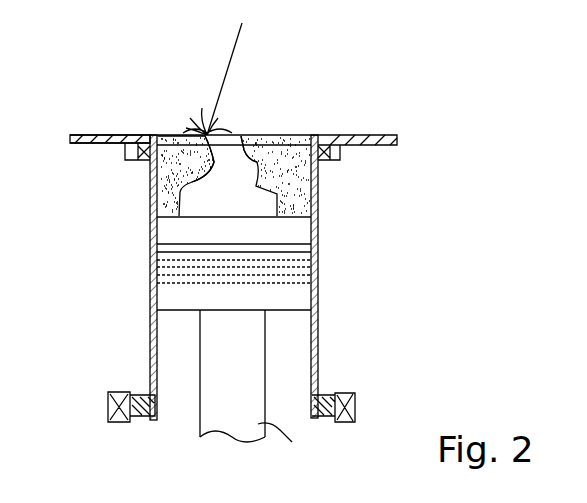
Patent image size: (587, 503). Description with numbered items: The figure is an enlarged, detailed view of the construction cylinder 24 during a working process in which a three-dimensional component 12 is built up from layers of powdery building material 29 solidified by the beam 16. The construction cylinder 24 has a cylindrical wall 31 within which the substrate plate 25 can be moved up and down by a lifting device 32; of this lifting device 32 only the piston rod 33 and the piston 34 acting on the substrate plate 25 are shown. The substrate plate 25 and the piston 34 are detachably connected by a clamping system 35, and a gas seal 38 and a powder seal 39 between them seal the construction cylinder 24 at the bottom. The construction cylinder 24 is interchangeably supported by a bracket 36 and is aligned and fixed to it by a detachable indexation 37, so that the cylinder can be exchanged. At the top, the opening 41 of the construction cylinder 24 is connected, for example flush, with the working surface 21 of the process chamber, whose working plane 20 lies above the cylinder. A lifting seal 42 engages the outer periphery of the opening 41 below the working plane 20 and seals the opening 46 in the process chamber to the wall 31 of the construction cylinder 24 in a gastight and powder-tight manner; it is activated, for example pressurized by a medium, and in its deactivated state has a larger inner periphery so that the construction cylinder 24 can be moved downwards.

The three-dimensional component 12 is at (170, 134).
The beam 16 is at (228, 62).
The working plane 20 is at (372, 134).
The working surface 21 is at (84, 134).
The construction cylinder 24 is at (140, 340).
The substrate plate 25 is at (258, 240).
The powdery building material 29 is at (297, 134).
The cylindrical wall 31 is at (320, 197).
The lifting device 32 is at (178, 440).
The piston rod 33 is at (262, 424).
The piston 34 is at (158, 299).
The clamping system 35 is at (311, 253).
The bracket 36 is at (330, 392).
The indexation 37 is at (108, 392).
The gas seal 38 is at (311, 282).
The powder seal 39 is at (153, 245).
The opening 41 is at (278, 133).
The lifting seal 42 is at (140, 162).
The opening 46 is at (324, 134).